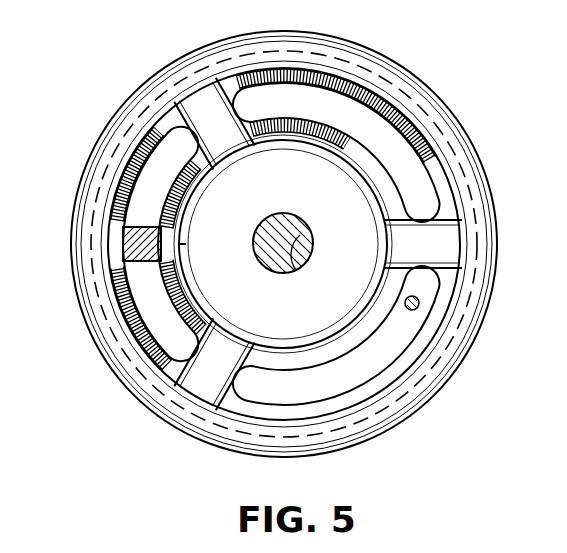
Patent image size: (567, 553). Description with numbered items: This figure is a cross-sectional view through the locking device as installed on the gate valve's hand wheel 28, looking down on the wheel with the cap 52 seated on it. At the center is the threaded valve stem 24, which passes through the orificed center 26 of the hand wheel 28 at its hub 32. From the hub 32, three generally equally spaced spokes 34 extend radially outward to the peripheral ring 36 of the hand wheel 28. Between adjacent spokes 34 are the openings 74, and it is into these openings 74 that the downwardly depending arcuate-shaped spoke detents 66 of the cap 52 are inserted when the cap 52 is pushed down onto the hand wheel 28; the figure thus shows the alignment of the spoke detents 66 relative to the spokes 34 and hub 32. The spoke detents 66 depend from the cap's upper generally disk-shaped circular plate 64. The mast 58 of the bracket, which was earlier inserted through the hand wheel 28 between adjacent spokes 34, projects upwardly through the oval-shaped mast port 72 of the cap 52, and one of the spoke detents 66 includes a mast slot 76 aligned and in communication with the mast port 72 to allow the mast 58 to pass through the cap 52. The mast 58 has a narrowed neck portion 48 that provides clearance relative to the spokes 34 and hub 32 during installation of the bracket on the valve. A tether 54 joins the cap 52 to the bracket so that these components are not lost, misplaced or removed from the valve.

The valve stem 24 is at (283, 213).
The orificed center 26 is at (312, 239).
The hand wheel 28 is at (131, 62).
The hub 32 is at (295, 308).
The spokes 34 is at (205, 108).
The peripheral ring 36 is at (453, 112).
The narrowed neck portion 48 is at (124, 240).
The cap 52 is at (380, 72).
The tether 54 is at (419, 303).
The mast 58 is at (124, 254).
The circular plate 64 is at (410, 95).
The spoke detents 66 is at (290, 100).
The mast port 72 is at (172, 232).
The openings 74 is at (350, 88).
The mast slot 76 is at (172, 244).